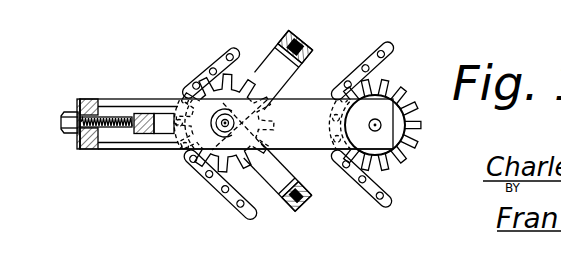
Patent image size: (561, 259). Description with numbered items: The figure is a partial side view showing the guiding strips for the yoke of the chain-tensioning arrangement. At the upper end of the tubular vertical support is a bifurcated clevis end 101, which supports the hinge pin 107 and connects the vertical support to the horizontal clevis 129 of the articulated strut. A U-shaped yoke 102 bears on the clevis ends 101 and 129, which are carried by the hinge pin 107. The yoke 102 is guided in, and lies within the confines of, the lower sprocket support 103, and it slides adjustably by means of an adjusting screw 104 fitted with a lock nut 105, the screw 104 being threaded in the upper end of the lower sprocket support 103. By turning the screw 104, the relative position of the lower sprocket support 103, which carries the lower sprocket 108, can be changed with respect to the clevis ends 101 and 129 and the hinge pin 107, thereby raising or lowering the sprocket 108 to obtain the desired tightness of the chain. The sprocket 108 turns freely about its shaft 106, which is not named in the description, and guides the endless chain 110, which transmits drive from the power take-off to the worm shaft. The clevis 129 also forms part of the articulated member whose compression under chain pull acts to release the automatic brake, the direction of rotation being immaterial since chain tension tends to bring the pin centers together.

The clevis end 101 is at (277, 183).
The U-shaped yoke 102 is at (141, 107).
The lower sprocket support 103 is at (163, 149).
The adjusting screw 104 is at (122, 128).
The lock nut 105 is at (78, 110).
The sprocket shaft 106 is at (381, 124).
The hinge pin 107 is at (222, 129).
The lower sprocket 108 is at (405, 163).
The endless chain 110 is at (226, 57).
The horizontal clevis 129 is at (264, 58).